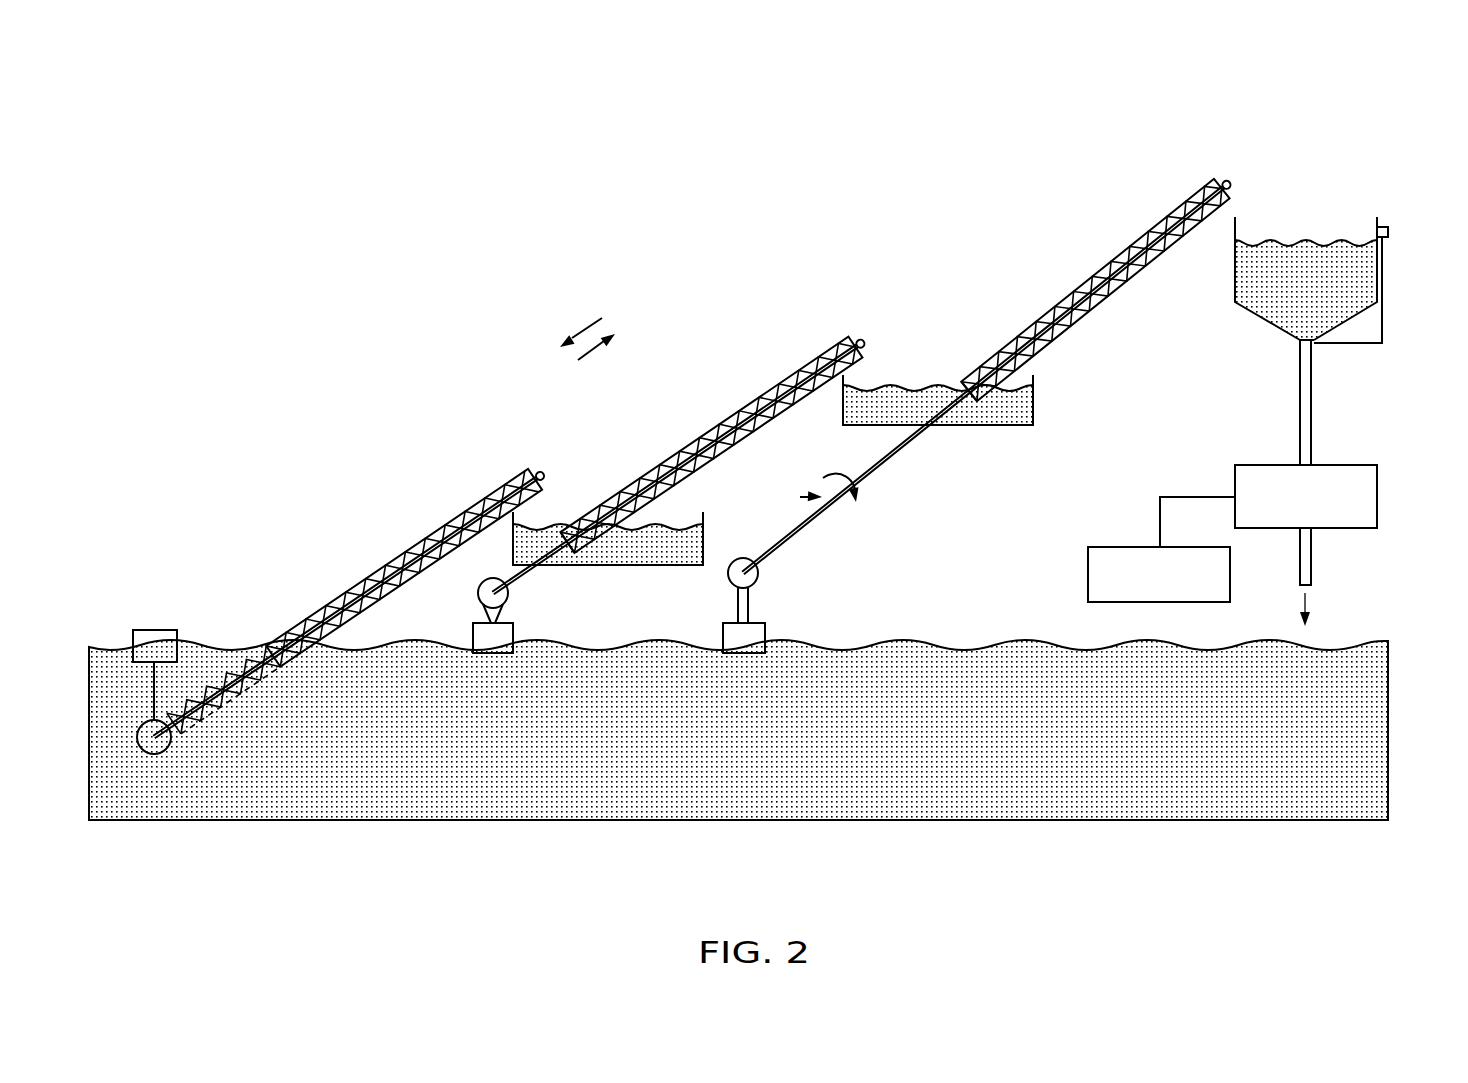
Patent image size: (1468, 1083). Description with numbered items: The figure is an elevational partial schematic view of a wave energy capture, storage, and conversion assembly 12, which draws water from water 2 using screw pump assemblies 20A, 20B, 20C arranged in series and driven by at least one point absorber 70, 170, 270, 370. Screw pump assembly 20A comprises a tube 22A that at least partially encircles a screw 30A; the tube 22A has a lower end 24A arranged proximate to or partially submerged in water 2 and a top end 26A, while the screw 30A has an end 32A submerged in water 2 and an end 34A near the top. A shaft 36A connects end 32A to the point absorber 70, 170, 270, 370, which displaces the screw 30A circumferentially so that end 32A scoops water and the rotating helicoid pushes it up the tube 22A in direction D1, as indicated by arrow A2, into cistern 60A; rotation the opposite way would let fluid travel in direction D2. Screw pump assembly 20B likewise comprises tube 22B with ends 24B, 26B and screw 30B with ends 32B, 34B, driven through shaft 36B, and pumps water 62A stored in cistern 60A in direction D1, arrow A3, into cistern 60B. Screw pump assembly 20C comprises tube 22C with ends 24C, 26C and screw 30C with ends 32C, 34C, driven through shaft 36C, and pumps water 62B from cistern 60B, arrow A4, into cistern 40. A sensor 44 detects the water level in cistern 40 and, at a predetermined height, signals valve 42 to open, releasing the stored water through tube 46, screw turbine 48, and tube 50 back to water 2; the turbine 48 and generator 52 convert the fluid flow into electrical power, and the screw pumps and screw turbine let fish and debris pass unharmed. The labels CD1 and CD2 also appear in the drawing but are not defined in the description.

The water 2 is at (1005, 652).
The wave energy capture, storage, and conversion assembly 12 is at (758, 534).
The screw pump assembly 20A is at (400, 677).
The screw pump assembly 20B is at (699, 463).
The screw pump assembly 20C is at (1002, 365).
The tube 22A is at (425, 540).
The tube 22B is at (737, 413).
The tube 22C is at (1138, 238).
The end 24A is at (297, 673).
The end 24B is at (575, 518).
The end 24C is at (975, 365).
The end 26A is at (530, 477).
The end 26B is at (858, 342).
The end 26C is at (1220, 182).
The screw 30A is at (287, 668).
The screw 30B is at (740, 446).
The screw 30C is at (1100, 313).
The end 32A is at (222, 718).
The end 32B is at (603, 566).
The end 32C is at (975, 405).
The end 34A is at (536, 455).
The end 34B is at (872, 322).
The end 34C is at (1252, 160).
The shaft 36A is at (177, 745).
The shaft 36B is at (530, 570).
The shaft 36C is at (790, 538).
The cistern 40 is at (1234, 276).
The valve 42 is at (1300, 340).
The sensor 44 is at (1390, 233).
The tube 46 is at (1299, 424).
The turbine 48 is at (1345, 465).
The tube 50 is at (1313, 560).
The generator 52 is at (1122, 547).
The cistern 60A is at (612, 574).
The cistern 60B is at (968, 438).
The water 62A is at (673, 550).
The water 62B is at (1018, 407).
The point absorber 70 is at (170, 594).
The point absorber 170 is at (530, 695).
The point absorber 270 is at (765, 697).
The point absorber 370 is at (155, 646).
The arrow A2 is at (557, 504).
The arrow A3 is at (882, 372).
The arrow A4 is at (1275, 226).
The direction D1 is at (600, 345).
The direction D2 is at (592, 322).
The first rotation direction CD1 is at (842, 478).
The second rotation direction CD2 is at (806, 497).